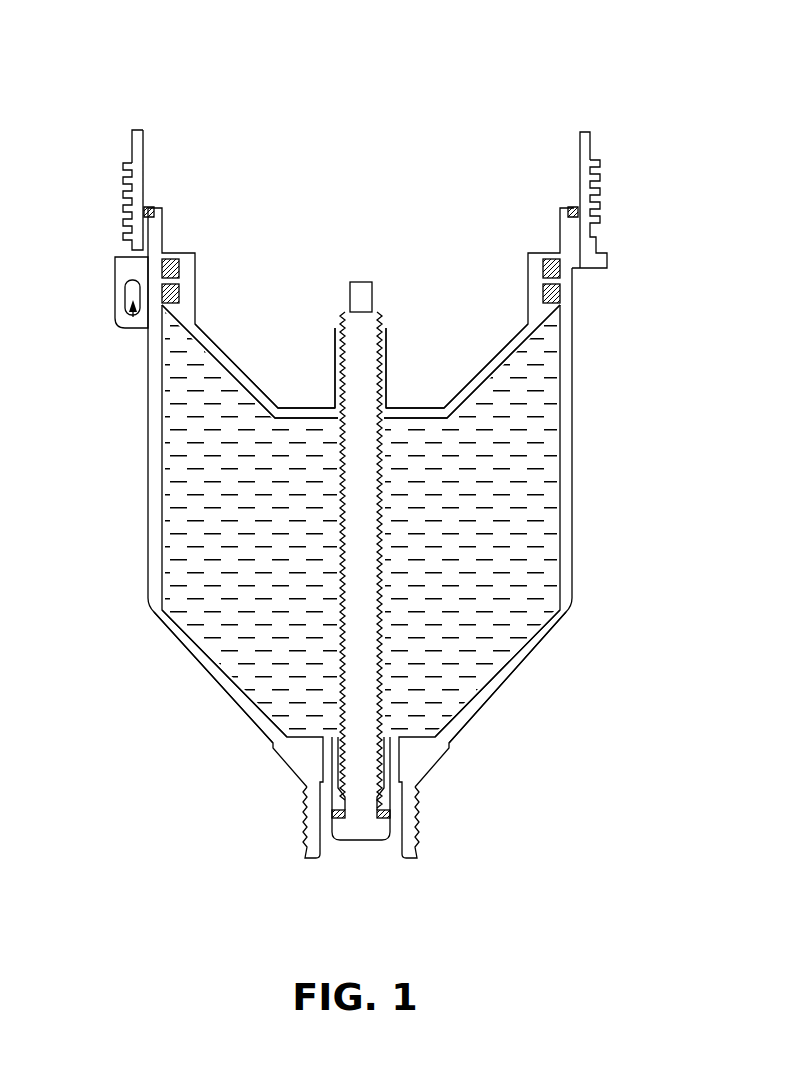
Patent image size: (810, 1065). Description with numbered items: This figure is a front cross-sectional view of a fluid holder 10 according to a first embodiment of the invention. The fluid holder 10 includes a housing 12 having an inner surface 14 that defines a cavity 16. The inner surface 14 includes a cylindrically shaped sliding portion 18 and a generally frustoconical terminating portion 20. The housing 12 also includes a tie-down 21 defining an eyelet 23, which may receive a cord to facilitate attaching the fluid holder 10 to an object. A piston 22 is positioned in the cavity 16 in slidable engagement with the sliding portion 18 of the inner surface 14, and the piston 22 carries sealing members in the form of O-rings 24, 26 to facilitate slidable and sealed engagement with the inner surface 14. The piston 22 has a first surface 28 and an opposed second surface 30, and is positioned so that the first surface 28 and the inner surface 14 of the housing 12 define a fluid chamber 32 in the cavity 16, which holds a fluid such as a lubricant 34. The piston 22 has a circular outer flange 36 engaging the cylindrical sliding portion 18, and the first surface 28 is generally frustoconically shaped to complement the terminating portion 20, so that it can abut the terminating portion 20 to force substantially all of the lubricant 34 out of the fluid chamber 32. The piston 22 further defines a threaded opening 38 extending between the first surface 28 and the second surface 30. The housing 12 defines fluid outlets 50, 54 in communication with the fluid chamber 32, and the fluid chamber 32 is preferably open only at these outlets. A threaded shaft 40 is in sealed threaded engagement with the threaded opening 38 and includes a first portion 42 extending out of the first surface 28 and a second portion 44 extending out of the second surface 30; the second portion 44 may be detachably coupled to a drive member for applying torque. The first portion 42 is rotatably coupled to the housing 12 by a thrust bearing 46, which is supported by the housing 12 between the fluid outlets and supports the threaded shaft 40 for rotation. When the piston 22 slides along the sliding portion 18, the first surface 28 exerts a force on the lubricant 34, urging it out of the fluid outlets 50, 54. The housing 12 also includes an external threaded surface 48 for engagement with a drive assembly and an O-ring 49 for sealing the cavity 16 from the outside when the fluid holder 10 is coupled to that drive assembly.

The fluid holder 10 is at (104, 63).
The housing 12 is at (575, 478).
The inner surface 14 is at (560, 228).
The cavity 16 is at (441, 314).
The sliding portion 18 is at (560, 394).
The terminating portion 20 is at (478, 684).
The tie-down 21 is at (118, 290).
The piston 22 is at (200, 340).
The eyelet 23 is at (133, 318).
The O-ring 24 is at (548, 296).
The O-ring 26 is at (548, 272).
The first surface 28 is at (217, 370).
The second surface 30 is at (215, 344).
The fluid chamber 32 is at (230, 505).
The lubricant 34 is at (465, 505).
The circular outer flange 36 is at (162, 282).
The threaded opening 38 is at (388, 352).
The threaded shaft 40 is at (353, 390).
The first portion 42 is at (360, 692).
The second portion 44 is at (350, 296).
The thrust bearing 46 is at (406, 815).
The external threaded surface 48 is at (127, 175).
The O-ring 49 is at (149, 207).
The fluid outlet 50 is at (316, 815).
The fluid outlet 54 is at (405, 798).